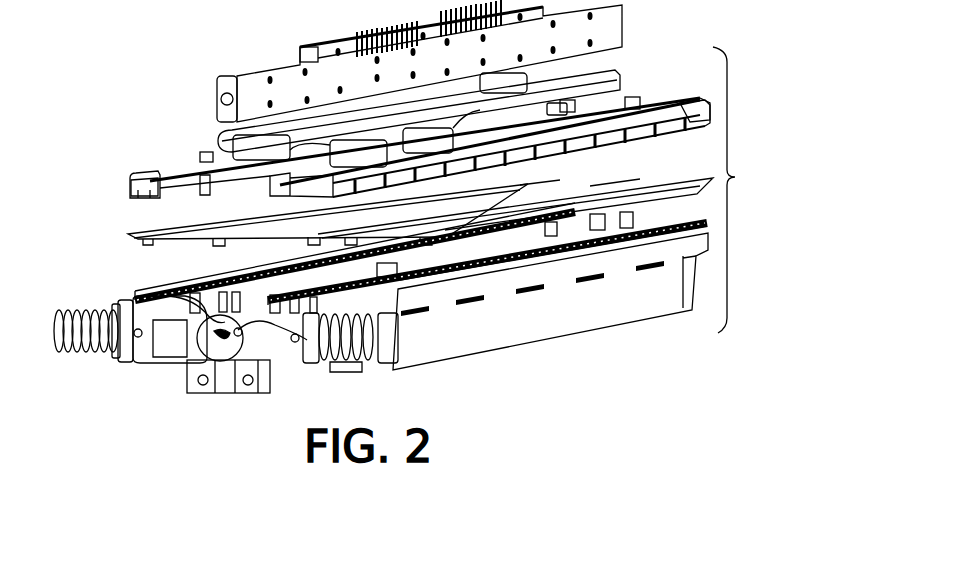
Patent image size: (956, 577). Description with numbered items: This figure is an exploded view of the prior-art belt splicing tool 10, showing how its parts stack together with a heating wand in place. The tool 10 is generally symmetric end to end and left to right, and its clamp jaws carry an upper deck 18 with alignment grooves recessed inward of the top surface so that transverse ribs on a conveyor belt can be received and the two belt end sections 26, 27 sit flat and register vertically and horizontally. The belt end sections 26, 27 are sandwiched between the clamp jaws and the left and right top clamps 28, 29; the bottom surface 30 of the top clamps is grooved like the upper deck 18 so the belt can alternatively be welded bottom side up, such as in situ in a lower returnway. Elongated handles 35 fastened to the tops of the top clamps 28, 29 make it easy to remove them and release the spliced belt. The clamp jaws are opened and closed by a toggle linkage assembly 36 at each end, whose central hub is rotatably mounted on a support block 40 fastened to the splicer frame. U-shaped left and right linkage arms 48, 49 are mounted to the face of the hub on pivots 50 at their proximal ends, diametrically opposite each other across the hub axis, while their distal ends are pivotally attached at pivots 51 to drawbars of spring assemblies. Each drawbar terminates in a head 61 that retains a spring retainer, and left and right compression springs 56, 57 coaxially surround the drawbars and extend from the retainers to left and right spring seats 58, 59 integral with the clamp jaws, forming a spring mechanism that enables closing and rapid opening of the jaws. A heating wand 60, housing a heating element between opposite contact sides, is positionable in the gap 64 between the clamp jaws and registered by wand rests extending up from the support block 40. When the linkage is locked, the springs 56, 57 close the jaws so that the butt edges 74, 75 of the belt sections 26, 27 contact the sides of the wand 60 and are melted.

The tool 10 is at (740, 177).
The upper deck 18 is at (175, 292).
The belt end section 26 is at (170, 228).
The belt end section 27 is at (592, 184).
The left top clamp 28 is at (160, 172).
The right top clamp 29 is at (668, 105).
The bottom surface 30 is at (160, 198).
The elongated handle 35 is at (618, 84).
The toggle linkage assembly 36 is at (176, 377).
The support block 40 is at (265, 380).
The left linkage arm 48 is at (152, 298).
The right linkage arm 49 is at (300, 375).
The pivot 50 is at (243, 385).
The pivot 51 is at (118, 300).
The left compression spring 56 is at (75, 352).
The right compression spring 57 is at (365, 370).
The left spring seat 58 is at (120, 362).
The right spring seat 59 is at (345, 378).
The heating wand 60 is at (622, 22).
The head 61 is at (400, 350).
The gap 64 is at (265, 272).
The butt edge 74 is at (522, 184).
The butt edge 75 is at (597, 186).